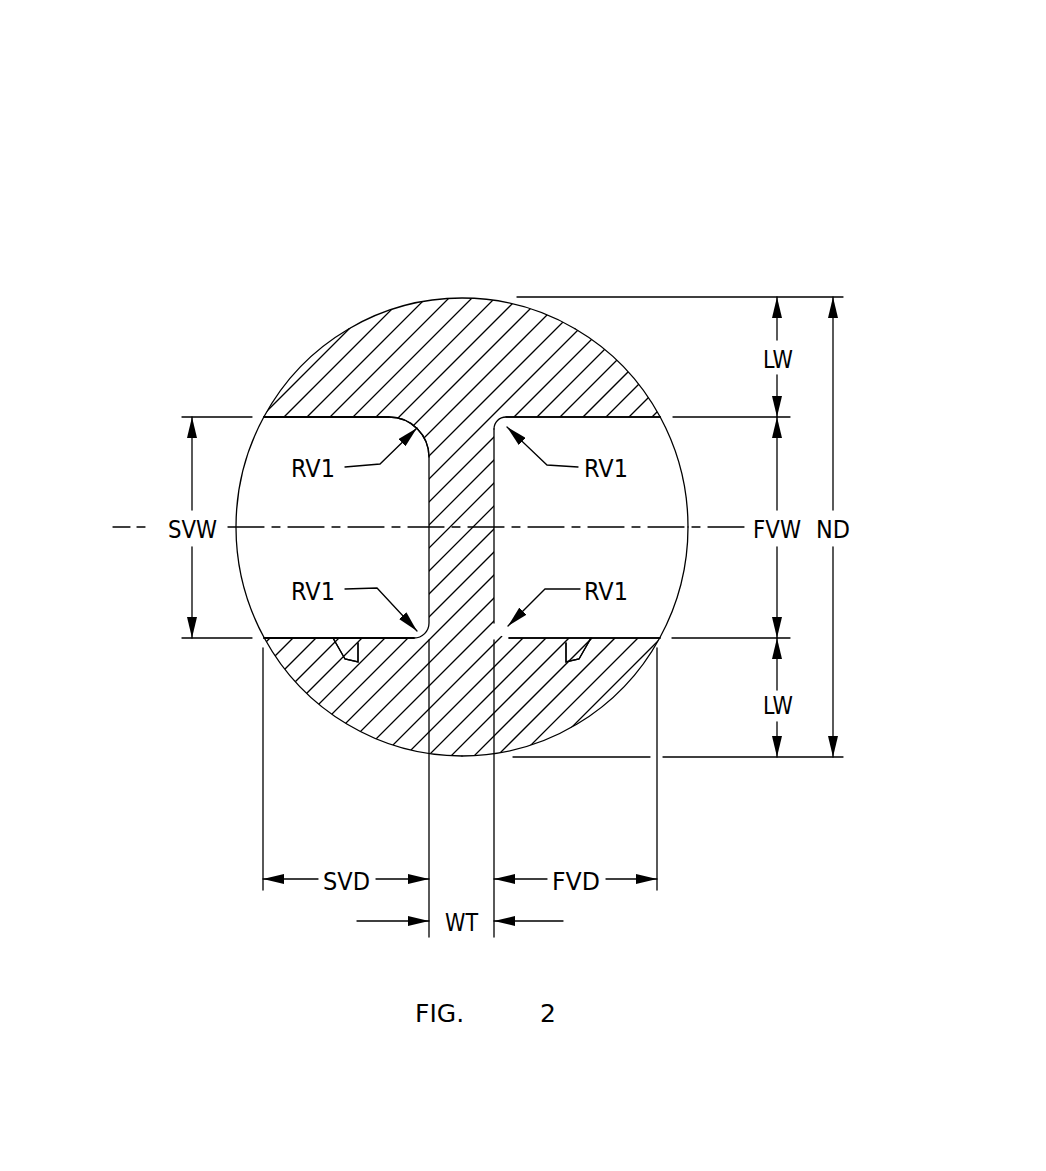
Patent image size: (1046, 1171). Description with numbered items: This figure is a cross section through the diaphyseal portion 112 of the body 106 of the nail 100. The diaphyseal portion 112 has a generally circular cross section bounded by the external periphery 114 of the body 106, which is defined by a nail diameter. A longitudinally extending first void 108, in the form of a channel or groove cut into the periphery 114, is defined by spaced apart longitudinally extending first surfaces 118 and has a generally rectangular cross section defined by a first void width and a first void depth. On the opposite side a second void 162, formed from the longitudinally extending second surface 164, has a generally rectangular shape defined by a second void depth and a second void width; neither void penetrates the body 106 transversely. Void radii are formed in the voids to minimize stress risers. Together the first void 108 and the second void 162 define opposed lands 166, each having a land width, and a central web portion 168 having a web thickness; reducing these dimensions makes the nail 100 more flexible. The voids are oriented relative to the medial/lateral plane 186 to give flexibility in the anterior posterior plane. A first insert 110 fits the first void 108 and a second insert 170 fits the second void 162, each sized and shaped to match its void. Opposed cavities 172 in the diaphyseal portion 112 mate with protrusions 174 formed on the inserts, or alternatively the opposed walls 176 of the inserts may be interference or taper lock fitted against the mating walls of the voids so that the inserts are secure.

The nail 100 is at (653, 117).
The body 106 is at (478, 220).
The first void 108 is at (682, 553).
The first insert 110 is at (682, 470).
The diaphyseal portion 112 is at (352, 278).
The external periphery 114 is at (422, 300).
The longitudinally extending first surface 118 is at (512, 750).
The second void 162 is at (223, 577).
The longitudinally extending second surface 164 is at (302, 639).
The lands 166 is at (333, 337).
The web portion 168 is at (495, 552).
The second insert 170 is at (246, 456).
The opposed cavities 172 is at (353, 636).
The protrusions 174 is at (342, 656).
The opposed walls 176 is at (300, 413).
The medial/lateral plane 186 is at (141, 523).